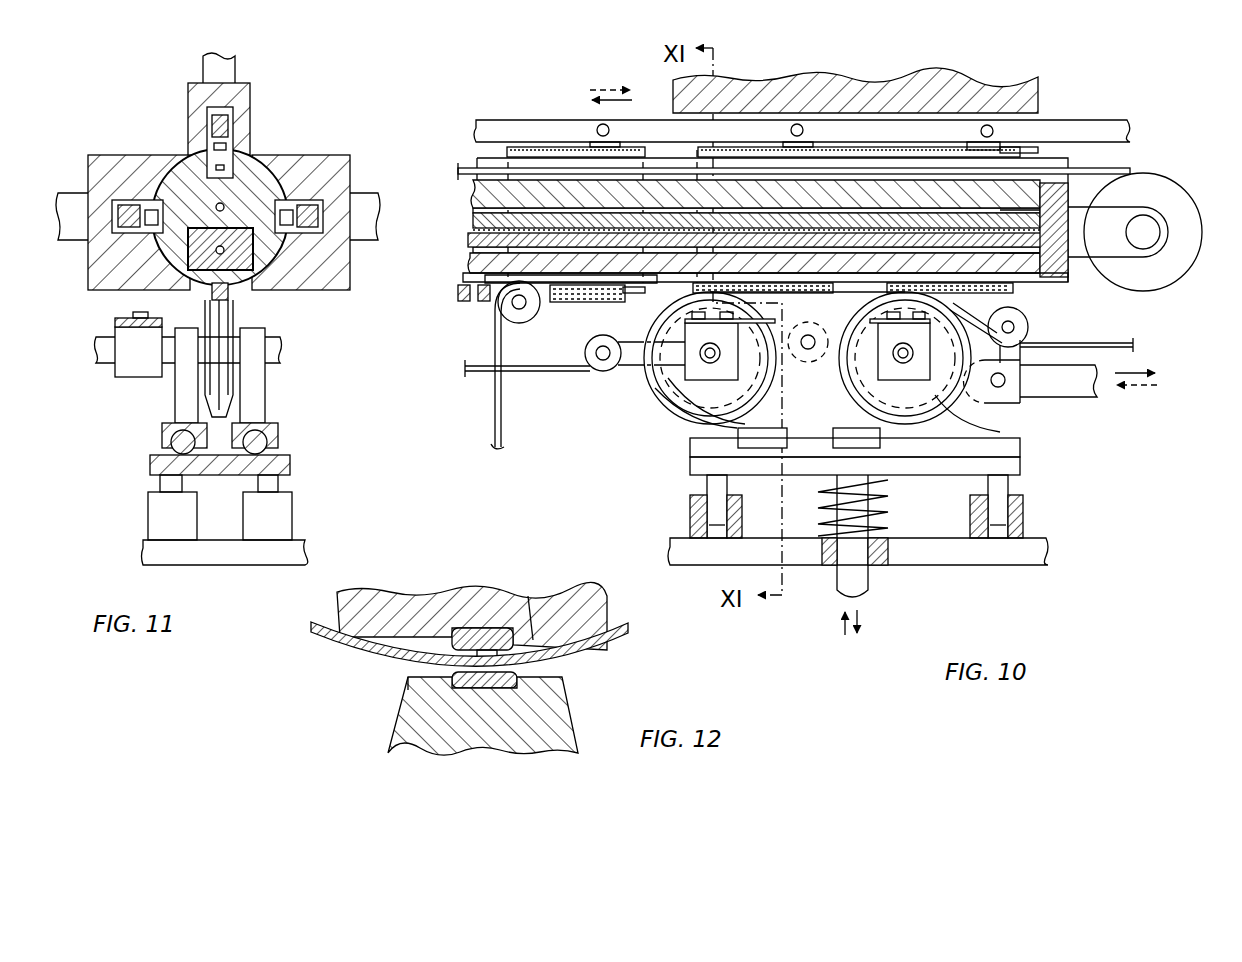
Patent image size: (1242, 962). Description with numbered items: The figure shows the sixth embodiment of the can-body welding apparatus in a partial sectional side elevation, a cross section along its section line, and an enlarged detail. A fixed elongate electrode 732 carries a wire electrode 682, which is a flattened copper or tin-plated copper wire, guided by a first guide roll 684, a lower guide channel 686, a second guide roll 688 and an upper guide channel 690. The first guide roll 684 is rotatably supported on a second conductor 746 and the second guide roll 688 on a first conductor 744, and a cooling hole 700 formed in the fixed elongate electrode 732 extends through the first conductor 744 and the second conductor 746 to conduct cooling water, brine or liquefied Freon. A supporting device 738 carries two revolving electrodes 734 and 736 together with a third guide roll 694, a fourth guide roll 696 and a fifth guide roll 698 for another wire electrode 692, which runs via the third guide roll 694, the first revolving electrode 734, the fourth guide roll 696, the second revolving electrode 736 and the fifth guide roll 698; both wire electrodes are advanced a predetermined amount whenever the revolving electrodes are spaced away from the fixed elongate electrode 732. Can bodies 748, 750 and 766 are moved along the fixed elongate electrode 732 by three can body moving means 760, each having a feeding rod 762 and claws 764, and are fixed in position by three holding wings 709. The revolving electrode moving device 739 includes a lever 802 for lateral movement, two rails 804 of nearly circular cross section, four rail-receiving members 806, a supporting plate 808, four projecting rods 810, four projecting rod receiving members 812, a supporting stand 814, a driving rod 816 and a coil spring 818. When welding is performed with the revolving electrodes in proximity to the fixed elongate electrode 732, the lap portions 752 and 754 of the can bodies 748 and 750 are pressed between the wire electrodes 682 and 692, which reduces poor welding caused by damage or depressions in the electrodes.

In FIG. 10, the wire electrode 682 is at (500, 445).
In FIG. 12, the wire electrode 682 is at (472, 628).
In FIG. 10, the first guide roll 684 is at (523, 314).
In FIG. 10, the lower guide channel 686 is at (663, 290).
In FIG. 12, the lower guide channel 686 is at (533, 607).
In FIG. 10, the second guide roll 688 is at (1187, 206).
In FIG. 10, the upper guide channel 690 is at (1068, 165).
In FIG. 10, the wire electrode 692 is at (1133, 345).
In FIG. 12, the wire electrode 692 is at (408, 690).
In FIG. 10, the third guide roll 694 is at (1028, 327).
In FIG. 10, the fourth guide roll 696 is at (812, 356).
In FIG. 10, the fifth guide roll 698 is at (583, 373).
In FIG. 11, the cooling hole 700 is at (227, 207).
In FIG. 10, the cooling hole 700 is at (484, 203).
In FIG. 11, the holding wing 709 is at (107, 158).
In FIG. 10, the fixed elongate electrode 732 is at (464, 240).
In FIG. 12, the fixed elongate electrode 732 is at (600, 610).
In FIG. 10, the first revolving electrode 734 is at (1010, 300).
In FIG. 10, the second revolving electrode 736 is at (662, 393).
In FIG. 12, the second revolving electrode 736 is at (560, 710).
In FIG. 10, the second wheel 738 is at (932, 400).
In FIG. 10, the revolving electrode moving device 739 is at (1056, 562).
In FIG. 11, the first conductor 744 is at (168, 247).
In FIG. 10, the first conductor 744 is at (1062, 288).
In FIG. 11, the second conductor 746 is at (237, 273).
In FIG. 10, the second conductor 746 is at (788, 301).
In FIG. 10, the can body 748 is at (935, 150).
In FIG. 10, the can body 750 is at (757, 147).
In FIG. 12, the can body 750 is at (573, 640).
In FIG. 10, the lap portion 752 is at (1104, 230).
In FIG. 10, the lap portion 754 is at (812, 352).
In FIG. 12, the lap portion 754 is at (517, 665).
In FIG. 11, the can body moving means 760 is at (233, 122).
In FIG. 10, the can body moving means 760 is at (512, 112).
In FIG. 10, the feeding rod 762 is at (1102, 124).
In FIG. 10, the tab 764 is at (993, 147).
In FIG. 10, the can body 766 is at (550, 147).
In FIG. 10, the lever 802 is at (1085, 398).
In FIG. 11, the rail 804 is at (165, 432).
In FIG. 10, the rail 804 is at (690, 447).
In FIG. 11, the rail-receiving member 806 is at (175, 435).
In FIG. 10, the rail-receiving member 806 is at (738, 433).
In FIG. 11, the supporting plate 808 is at (290, 465).
In FIG. 10, the supporting plate 808 is at (690, 470).
In FIG. 11, the projecting rod 810 is at (158, 483).
In FIG. 10, the projecting rod 810 is at (707, 490).
In FIG. 11, the projecting rod receiving member 812 is at (155, 520).
In FIG. 10, the projecting rod receiving member 812 is at (690, 515).
In FIG. 11, the supporting stand 814 is at (307, 555).
In FIG. 10, the supporting stand 814 is at (1000, 566).
In FIG. 10, the driving rod 816 is at (868, 585).
In FIG. 10, the coil spring 818 is at (888, 500).